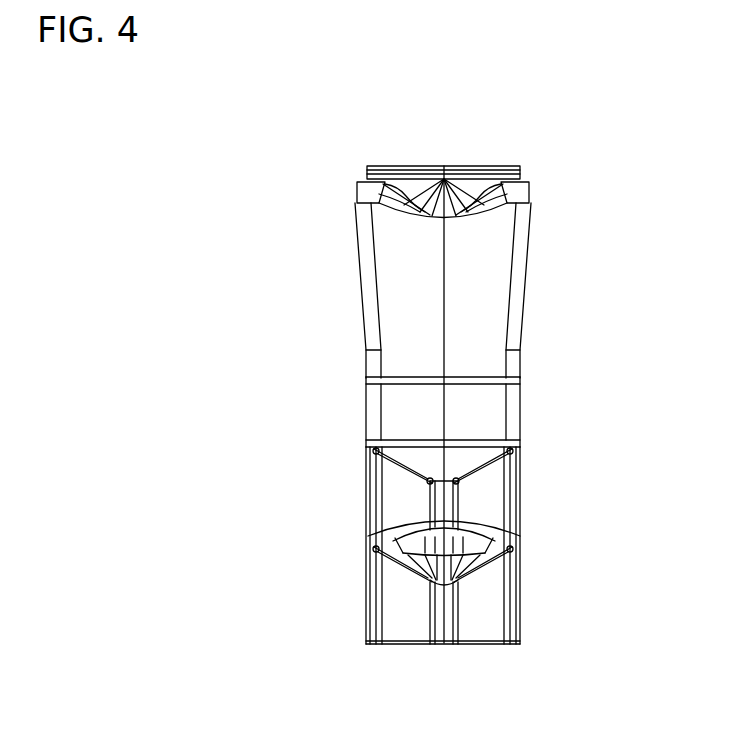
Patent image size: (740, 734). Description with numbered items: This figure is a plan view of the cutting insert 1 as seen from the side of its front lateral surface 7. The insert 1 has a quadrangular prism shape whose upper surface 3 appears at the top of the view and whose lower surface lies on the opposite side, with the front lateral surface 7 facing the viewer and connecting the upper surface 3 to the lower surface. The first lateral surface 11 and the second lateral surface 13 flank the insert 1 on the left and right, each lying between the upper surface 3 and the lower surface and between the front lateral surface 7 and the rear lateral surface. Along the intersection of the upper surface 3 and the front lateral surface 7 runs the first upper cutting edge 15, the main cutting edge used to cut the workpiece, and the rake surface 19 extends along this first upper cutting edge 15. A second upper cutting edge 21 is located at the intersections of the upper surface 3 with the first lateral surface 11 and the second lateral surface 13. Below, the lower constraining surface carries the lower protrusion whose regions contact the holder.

The insert 1 is at (417, 98).
The upper surface 3 is at (492, 173).
The first upper cutting edge 15 is at (384, 177).
The rake surface 19 is at (456, 173).
The second upper cutting edge 21 is at (355, 205).
The front lateral surface 7 is at (475, 324).
The first lateral surface 11 is at (365, 422).
The second lateral surface 13 is at (520, 405).